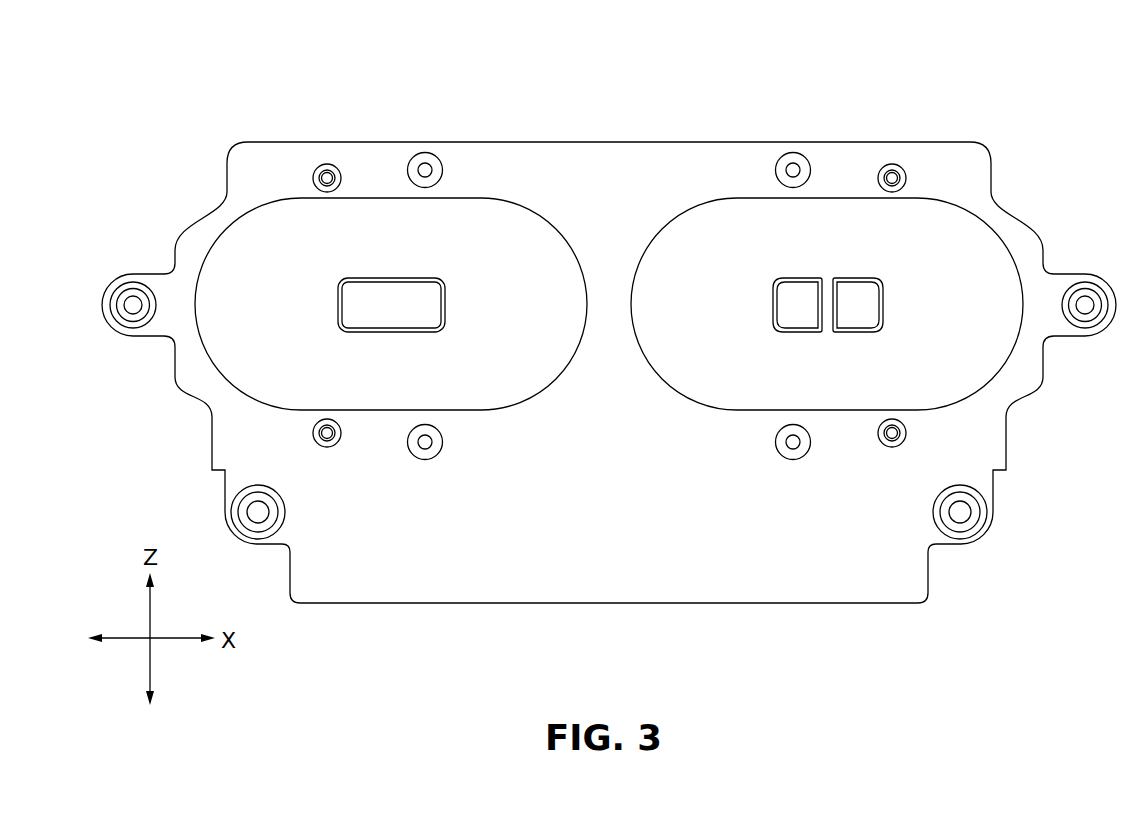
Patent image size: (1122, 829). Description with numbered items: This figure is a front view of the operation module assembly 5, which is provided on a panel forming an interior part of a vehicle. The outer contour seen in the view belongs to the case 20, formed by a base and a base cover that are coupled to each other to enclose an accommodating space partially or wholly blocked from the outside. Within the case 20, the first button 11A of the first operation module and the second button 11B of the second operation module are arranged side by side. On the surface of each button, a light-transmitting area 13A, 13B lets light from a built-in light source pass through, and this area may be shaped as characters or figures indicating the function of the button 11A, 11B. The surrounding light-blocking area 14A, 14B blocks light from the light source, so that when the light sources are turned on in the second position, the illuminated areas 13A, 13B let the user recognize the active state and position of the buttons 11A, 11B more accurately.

The operation module assembly 5 is at (609, 370).
The case 20 is at (747, 590).
The first button 11A is at (505, 188).
The second button 11B is at (942, 188).
The light-transmitting area 13A is at (397, 277).
The light-transmitting area 13B is at (789, 277).
The light-blocking area 14A is at (362, 268).
The light-blocking area 14B is at (829, 268).